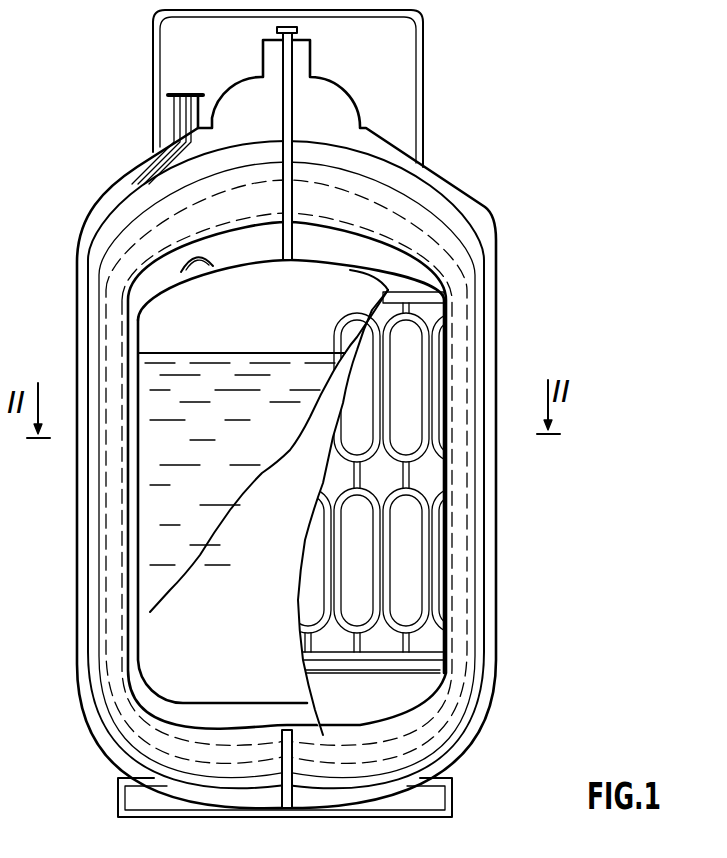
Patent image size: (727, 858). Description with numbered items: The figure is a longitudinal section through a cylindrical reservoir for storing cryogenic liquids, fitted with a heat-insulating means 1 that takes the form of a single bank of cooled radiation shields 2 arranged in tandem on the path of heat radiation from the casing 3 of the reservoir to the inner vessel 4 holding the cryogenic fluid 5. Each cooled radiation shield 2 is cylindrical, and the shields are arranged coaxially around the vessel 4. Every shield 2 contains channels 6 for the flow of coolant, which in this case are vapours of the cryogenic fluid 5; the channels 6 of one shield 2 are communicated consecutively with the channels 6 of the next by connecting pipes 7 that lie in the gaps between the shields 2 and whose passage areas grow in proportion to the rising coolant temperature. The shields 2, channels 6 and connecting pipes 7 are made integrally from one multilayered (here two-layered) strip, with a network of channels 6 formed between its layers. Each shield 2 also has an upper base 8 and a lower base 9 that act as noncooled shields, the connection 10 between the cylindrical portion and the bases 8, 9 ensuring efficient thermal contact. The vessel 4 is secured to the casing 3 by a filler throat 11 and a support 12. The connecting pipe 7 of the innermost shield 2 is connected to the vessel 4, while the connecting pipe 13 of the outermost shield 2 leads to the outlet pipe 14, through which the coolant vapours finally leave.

The heat-insulating means 1 is at (453, 332).
The cooled radiation shield 2 is at (88, 282).
The casing 3 is at (76, 462).
The vessel 4 is at (148, 518).
The cryogenic fluid 5 is at (262, 473).
The channels 6 is at (380, 563).
The connecting pipe 7 is at (187, 262).
The upper base 8 is at (157, 193).
The lower base 9 is at (447, 680).
The connection 10 is at (76, 243).
The filler throat 11 is at (292, 115).
The support 12 is at (305, 810).
The connecting pipe of the outer end shield 13 is at (185, 123).
The outlet pipe 14 is at (173, 108).